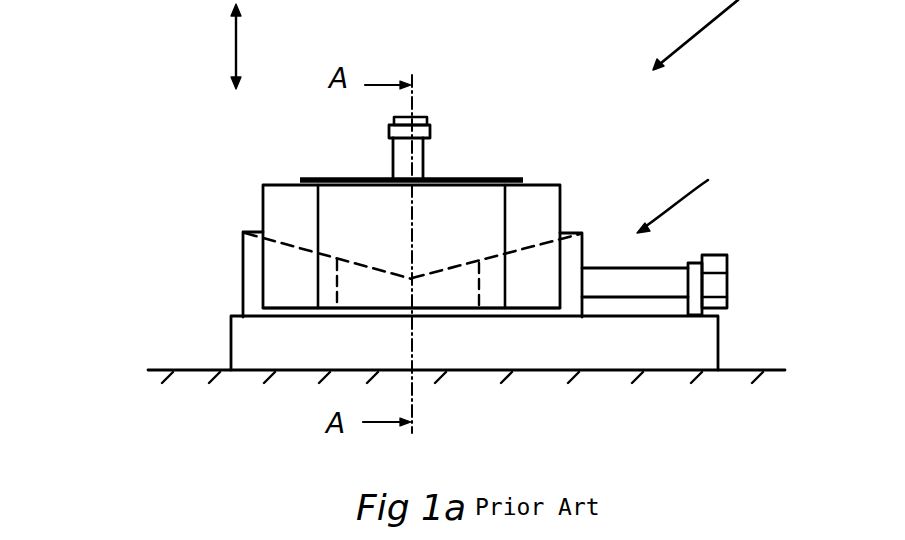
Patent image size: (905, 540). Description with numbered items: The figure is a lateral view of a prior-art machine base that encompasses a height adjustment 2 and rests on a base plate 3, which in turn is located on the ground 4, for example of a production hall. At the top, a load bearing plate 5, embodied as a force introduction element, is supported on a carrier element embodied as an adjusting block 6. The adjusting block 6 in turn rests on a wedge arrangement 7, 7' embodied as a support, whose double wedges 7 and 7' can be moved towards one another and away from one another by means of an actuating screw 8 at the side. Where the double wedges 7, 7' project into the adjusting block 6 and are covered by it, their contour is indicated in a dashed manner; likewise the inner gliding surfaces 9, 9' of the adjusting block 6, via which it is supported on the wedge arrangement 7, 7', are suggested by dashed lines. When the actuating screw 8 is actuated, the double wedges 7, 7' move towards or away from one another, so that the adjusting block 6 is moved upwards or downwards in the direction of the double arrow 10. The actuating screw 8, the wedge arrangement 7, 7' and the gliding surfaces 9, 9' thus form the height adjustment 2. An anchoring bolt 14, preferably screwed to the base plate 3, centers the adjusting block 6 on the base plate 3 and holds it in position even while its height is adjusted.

The height adjustment 2 is at (680, 194).
The base plate 3 is at (678, 358).
The ground 4 is at (176, 368).
The load bearing plate 5 is at (465, 178).
The adjusting block 6 is at (293, 210).
The double wedge 7 is at (212, 272).
The double wedge 7' is at (595, 234).
The actuating screw 8 is at (717, 288).
The inner gliding surface 9 is at (311, 346).
The inner gliding surface 9' is at (496, 346).
The double arrow 10 is at (233, 45).
The anchoring bolt 14 is at (395, 152).